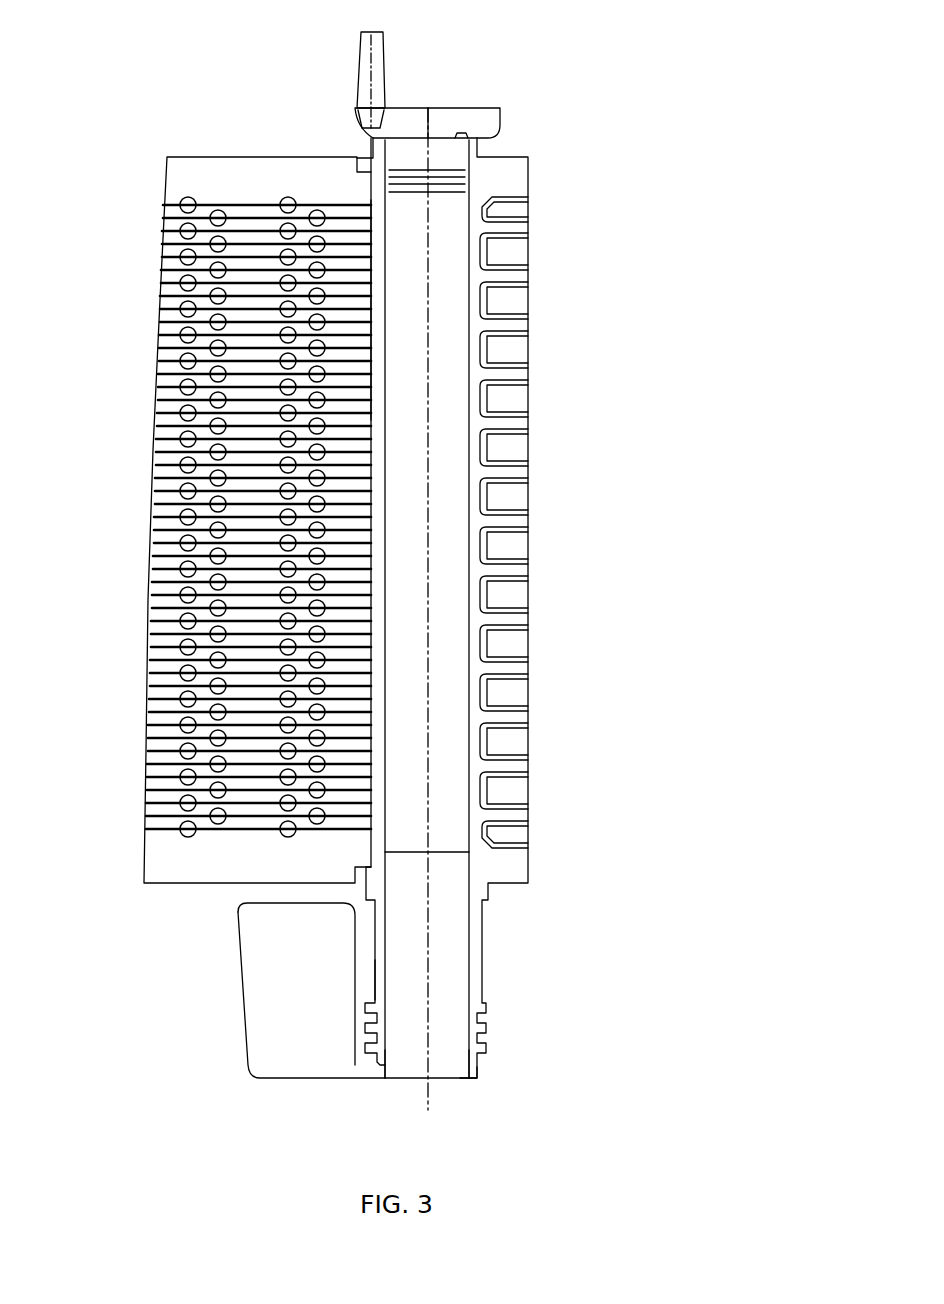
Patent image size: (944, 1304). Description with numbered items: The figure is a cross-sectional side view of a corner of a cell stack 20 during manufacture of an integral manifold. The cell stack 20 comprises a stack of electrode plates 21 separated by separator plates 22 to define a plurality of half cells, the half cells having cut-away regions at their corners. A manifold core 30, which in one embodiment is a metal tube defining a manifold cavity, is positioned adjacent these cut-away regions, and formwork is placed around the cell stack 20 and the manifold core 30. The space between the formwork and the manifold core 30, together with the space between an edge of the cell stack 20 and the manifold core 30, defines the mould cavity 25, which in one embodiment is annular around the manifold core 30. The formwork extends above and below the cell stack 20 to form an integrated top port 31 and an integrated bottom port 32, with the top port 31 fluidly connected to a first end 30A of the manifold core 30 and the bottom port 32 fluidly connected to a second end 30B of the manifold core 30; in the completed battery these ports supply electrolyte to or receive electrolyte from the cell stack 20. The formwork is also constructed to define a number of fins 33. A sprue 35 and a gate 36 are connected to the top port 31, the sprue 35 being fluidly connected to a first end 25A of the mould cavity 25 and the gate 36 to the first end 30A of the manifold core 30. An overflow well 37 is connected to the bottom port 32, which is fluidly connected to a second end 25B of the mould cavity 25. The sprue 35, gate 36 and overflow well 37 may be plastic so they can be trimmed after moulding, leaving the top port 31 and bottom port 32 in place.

The cell stack 20 is at (162, 118).
The electrode plate 21 is at (145, 512).
The separator plate 22 is at (152, 436).
The mould cavity 25 is at (383, 410).
The first end of the mould cavity 25A is at (497, 183).
The second end of the mould cavity 25B is at (370, 985).
The manifold core 30 is at (442, 717).
The first end of the manifold core 30A is at (490, 206).
The second end of the manifold core 30B is at (447, 1043).
The top port 31 is at (458, 153).
The bottom port 32 is at (500, 1075).
The fins 33 is at (502, 640).
The sprue 35 is at (392, 52).
The gate 36 is at (440, 96).
The overflow well 37 is at (278, 1066).